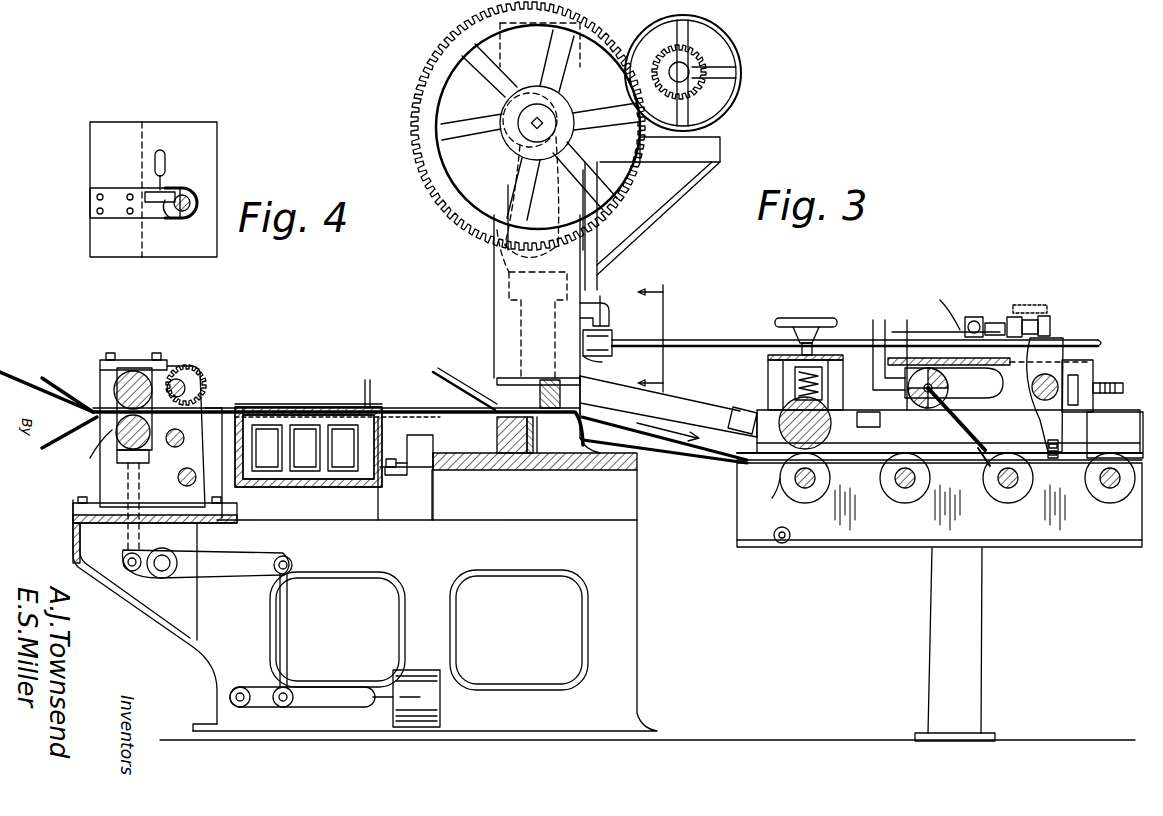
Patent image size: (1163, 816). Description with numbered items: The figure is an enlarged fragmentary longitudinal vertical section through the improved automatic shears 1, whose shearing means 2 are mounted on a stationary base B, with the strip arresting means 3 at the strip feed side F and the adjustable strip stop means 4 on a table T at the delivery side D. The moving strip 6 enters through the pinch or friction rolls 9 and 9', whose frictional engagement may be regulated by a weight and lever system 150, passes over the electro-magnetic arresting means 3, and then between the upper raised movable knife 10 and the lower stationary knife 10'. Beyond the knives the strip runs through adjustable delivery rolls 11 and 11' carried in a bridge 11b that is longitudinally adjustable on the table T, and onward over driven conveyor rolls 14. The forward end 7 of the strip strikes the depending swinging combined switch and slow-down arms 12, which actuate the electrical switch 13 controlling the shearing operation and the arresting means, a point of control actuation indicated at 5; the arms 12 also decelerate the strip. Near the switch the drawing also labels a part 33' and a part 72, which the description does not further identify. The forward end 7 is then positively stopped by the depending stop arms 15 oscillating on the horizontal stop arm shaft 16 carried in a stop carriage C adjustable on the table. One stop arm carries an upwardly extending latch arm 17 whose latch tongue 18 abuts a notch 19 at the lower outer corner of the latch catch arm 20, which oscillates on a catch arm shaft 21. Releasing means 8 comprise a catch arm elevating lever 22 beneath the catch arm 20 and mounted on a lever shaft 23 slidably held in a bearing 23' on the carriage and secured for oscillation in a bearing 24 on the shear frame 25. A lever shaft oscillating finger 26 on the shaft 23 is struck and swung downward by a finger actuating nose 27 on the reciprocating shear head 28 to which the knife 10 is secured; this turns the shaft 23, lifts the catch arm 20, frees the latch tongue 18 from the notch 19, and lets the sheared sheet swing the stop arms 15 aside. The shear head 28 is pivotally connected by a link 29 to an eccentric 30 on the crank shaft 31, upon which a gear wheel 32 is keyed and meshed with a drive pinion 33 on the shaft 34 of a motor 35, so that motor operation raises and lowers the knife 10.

In FIG. 3, the automatic shears 1 is at (487, 748).
In FIG. 3, the shearing means 2 is at (492, 341).
In FIG. 3, the strip arresting means 3 is at (281, 407).
In FIG. 3, the adjustable strip stop means 4 is at (1088, 318).
In FIG. 3, the control means actuation 5 is at (972, 478).
In FIG. 3, the strip 6 is at (711, 463).
In FIG. 3, the forward end of the strip 7 is at (1046, 446).
In FIG. 3, the releasing means 8 is at (612, 330).
In FIG. 4, the releasing means 8 is at (150, 188).
In FIG. 3, the pinch roll 9 is at (133, 391).
In FIG. 3, the pinch roll 9' is at (92, 451).
In FIG. 3, the upper movable knife 10 is at (516, 410).
In FIG. 3, the lower stationary knife 10' is at (535, 486).
In FIG. 3, the delivery roll 11 is at (786, 414).
In FIG. 3, the delivery roll 11' is at (761, 500).
In FIG. 3, the bridge 11b is at (835, 335).
In FIG. 3, the combined switch and strip slow-down arms 12 is at (960, 414).
In FIG. 3, the electrical switch 13 is at (940, 332).
In FIG. 3, the conveyor rolls 14 is at (895, 500).
In FIG. 3, the stop arms 15 is at (1120, 410).
In FIG. 3, the stop arm shaft 16 is at (1058, 385).
In FIG. 3, the latch arm 17 is at (1050, 325).
In FIG. 3, the latch tongue 18 is at (1045, 316).
In FIG. 3, the notch 19 is at (1018, 317).
In FIG. 3, the latch catch arm 20 is at (1015, 305).
In FIG. 3, the catch arm shaft 21 is at (983, 318).
In FIG. 3, the catch arm elevating lever 22 is at (990, 323).
In FIG. 3, the lever shaft 23 is at (1118, 336).
In FIG. 4, the lever shaft 23 is at (217, 194).
In FIG. 3, the bearing 23' is at (938, 303).
In FIG. 3, the bearing 24 is at (604, 362).
In FIG. 4, the bearing 24 is at (190, 215).
In FIG. 3, the shear frame 25 is at (497, 312).
In FIG. 4, the shear frame 25 is at (90, 170).
In FIG. 3, the lever shaft oscillating finger 26 is at (612, 336).
In FIG. 4, the lever shaft oscillating finger 26 is at (165, 162).
In FIG. 3, the finger actuating nose 27 is at (597, 300).
In FIG. 4, the finger actuating nose 27 is at (166, 158).
In FIG. 3, the reciprocating shear head 28 is at (490, 270).
In FIG. 3, the link 29 is at (508, 190).
In FIG. 3, the eccentric 30 is at (510, 118).
In FIG. 3, the crank shaft 31 is at (535, 105).
In FIG. 3, the gear wheel 32 is at (425, 58).
In FIG. 3, the drive pinion 33 is at (712, 82).
In FIG. 3, the crank disc 33' is at (915, 388).
In FIG. 3, the motor shaft 34 is at (689, 70).
In FIG. 3, the motor 35 is at (722, 30).
In FIG. 3, the crank pin 72 is at (910, 398).
In FIG. 3, the weight and lever system 150 is at (305, 708).
In FIG. 3, the stationary base B is at (640, 680).
In FIG. 3, the stop carriage C is at (1080, 345).
In FIG. 3, the delivery side D is at (836, 281).
In FIG. 3, the strip feed side F is at (155, 438).
In FIG. 3, the table T is at (858, 550).